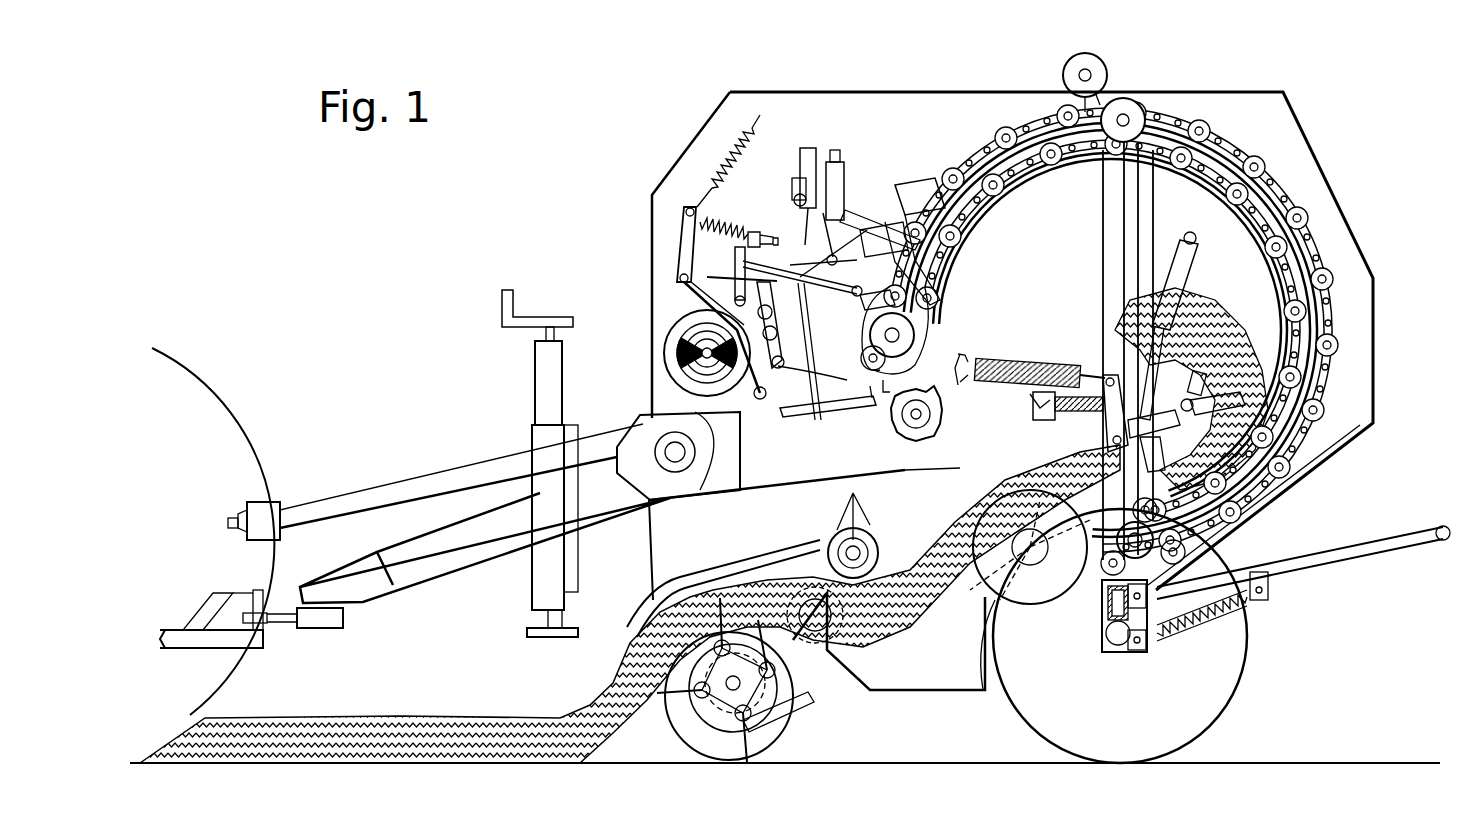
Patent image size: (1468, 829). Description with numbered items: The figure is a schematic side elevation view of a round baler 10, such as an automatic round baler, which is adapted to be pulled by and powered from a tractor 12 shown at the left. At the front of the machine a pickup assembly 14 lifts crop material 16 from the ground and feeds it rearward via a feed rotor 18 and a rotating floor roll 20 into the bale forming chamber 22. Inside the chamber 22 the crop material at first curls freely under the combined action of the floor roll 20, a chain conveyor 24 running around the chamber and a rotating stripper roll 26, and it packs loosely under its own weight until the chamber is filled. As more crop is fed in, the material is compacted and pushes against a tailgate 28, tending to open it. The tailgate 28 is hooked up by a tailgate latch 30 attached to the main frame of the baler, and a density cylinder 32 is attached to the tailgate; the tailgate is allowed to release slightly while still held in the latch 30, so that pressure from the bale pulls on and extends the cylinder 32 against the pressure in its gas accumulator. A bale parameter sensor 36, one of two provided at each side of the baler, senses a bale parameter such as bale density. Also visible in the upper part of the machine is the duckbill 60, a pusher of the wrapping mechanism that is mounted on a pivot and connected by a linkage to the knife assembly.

The baler 10 is at (618, 170).
The tractor 12 is at (245, 325).
The pickup assembly 14 is at (690, 740).
The crop material 16 is at (375, 718).
The feed rotor 18 is at (840, 530).
The floor roll 20 is at (985, 592).
The bale forming chamber 22 is at (1050, 267).
The chain conveyor 24 is at (1240, 235).
The stripper roll 26 is at (930, 442).
The tailgate 28 is at (1285, 500).
The tailgate latch 30 is at (1100, 448).
The density cylinder 32 is at (1170, 368).
The bale parameter sensor 36 is at (1040, 370).
The duckbill 60 is at (805, 400).